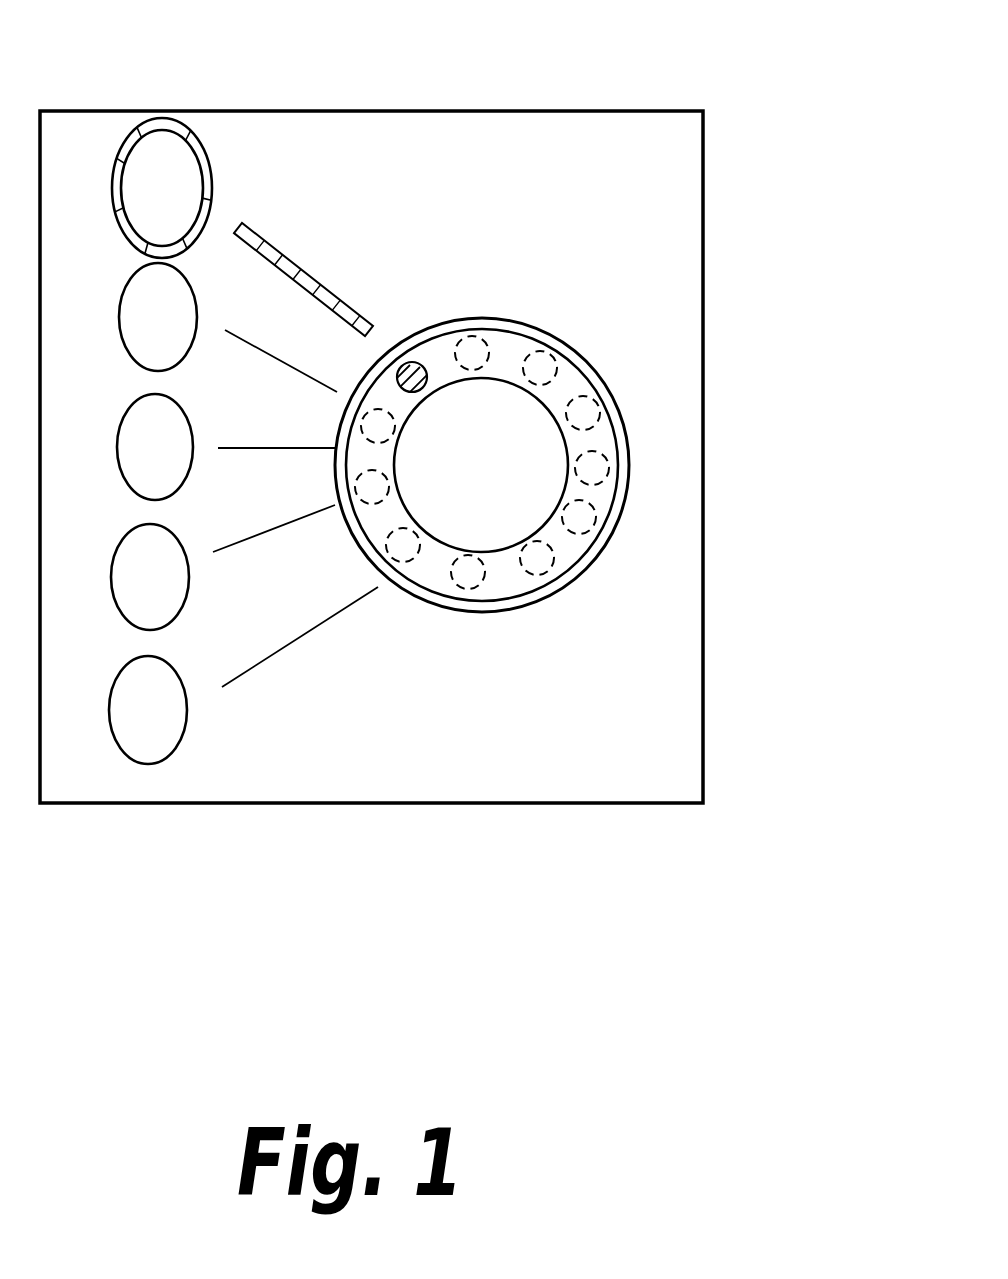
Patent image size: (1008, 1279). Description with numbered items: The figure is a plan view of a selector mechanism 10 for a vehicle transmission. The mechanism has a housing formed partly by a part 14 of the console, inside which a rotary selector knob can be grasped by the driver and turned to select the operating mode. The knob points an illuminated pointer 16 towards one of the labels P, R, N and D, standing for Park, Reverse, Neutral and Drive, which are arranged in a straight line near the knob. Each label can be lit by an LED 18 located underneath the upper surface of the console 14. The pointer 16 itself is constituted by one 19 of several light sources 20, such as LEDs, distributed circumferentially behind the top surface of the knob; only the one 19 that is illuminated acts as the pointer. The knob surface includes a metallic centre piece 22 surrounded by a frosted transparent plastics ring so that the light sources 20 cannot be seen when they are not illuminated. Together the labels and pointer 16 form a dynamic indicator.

The selector mechanism 10 is at (738, 456).
The part of the console 14 is at (663, 198).
The illuminated pointer 16 is at (505, 355).
The LED 18 is at (186, 136).
The one of several light sources 19 is at (413, 363).
The light sources 20 is at (366, 482).
The metallic centre piece 22 is at (505, 530).